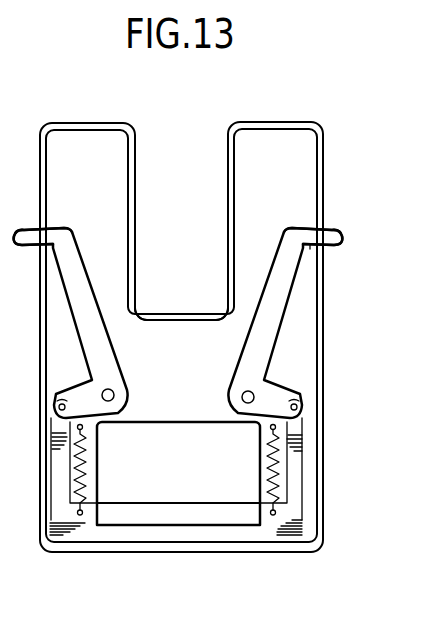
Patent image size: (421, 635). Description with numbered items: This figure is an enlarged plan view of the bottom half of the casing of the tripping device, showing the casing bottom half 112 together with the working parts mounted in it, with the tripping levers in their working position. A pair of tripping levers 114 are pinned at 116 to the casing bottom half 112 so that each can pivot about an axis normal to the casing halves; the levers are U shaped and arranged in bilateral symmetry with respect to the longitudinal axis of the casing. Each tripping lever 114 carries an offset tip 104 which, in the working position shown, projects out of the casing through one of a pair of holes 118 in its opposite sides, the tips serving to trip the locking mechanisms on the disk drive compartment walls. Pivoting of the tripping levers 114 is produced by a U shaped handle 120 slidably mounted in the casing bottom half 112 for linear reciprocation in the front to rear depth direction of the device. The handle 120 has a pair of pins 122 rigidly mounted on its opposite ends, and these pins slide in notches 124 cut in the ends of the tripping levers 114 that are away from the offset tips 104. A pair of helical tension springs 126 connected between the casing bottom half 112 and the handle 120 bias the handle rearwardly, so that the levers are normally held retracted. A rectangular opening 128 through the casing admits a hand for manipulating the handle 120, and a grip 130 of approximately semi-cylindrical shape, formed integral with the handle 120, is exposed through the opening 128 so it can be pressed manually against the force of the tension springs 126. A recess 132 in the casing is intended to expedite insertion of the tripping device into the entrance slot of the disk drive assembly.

The casing bottom half 112 is at (277, 121).
The offset tip 104 is at (38, 229).
The holes 118 is at (45, 247).
The recess 132 is at (137, 297).
The tripping levers 114 is at (250, 352).
The pin 116 is at (243, 398).
The pins 122 is at (61, 400).
The notches 124 is at (58, 410).
The helical tension springs 126 is at (84, 446).
The grip 130 is at (160, 501).
The rectangular opening 128 is at (256, 483).
The handle 120 is at (132, 531).